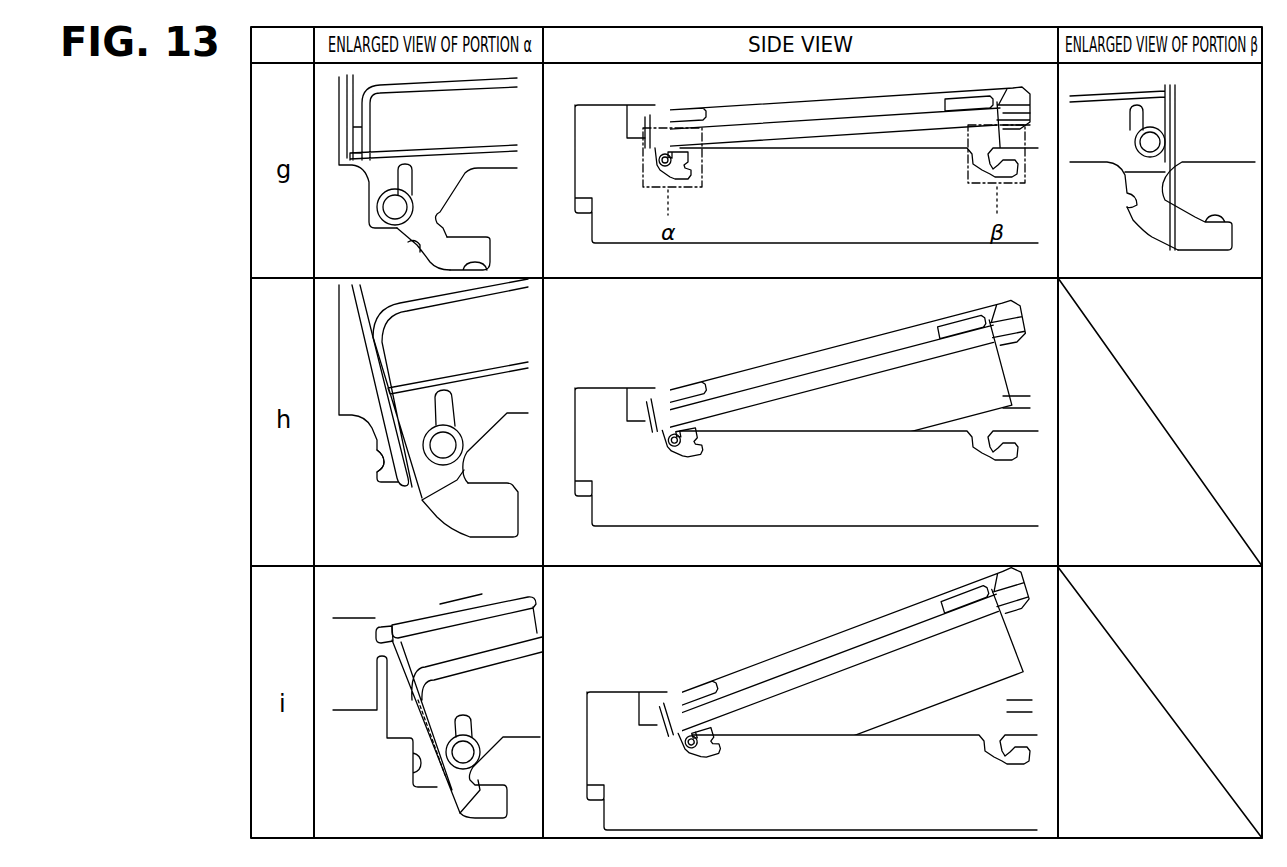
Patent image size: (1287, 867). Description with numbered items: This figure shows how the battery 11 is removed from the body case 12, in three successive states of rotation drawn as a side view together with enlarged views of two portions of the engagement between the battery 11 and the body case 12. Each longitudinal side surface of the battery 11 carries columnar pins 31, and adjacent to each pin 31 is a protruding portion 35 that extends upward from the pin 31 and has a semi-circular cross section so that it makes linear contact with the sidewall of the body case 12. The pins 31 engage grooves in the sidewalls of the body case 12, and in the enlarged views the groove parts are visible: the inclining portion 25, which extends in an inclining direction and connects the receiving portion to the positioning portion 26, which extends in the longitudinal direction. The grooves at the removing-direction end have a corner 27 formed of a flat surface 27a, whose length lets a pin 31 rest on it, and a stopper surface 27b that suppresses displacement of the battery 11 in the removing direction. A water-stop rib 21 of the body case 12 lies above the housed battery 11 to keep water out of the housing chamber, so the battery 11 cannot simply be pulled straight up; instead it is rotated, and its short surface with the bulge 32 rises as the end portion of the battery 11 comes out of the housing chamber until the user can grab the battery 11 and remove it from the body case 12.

The battery 11 is at (870, 103).
The body case 12 is at (786, 243).
The water-stop rib 21 is at (387, 678).
The inclining portion 25 is at (446, 219).
The positioning portion 26 is at (418, 250).
The corner 27 is at (487, 264).
The flat surface 27a is at (405, 486).
The stopper surface 27b is at (377, 470).
The pin 31 is at (392, 206).
The bulge 32 is at (377, 627).
The protruding portion 35 is at (400, 178).